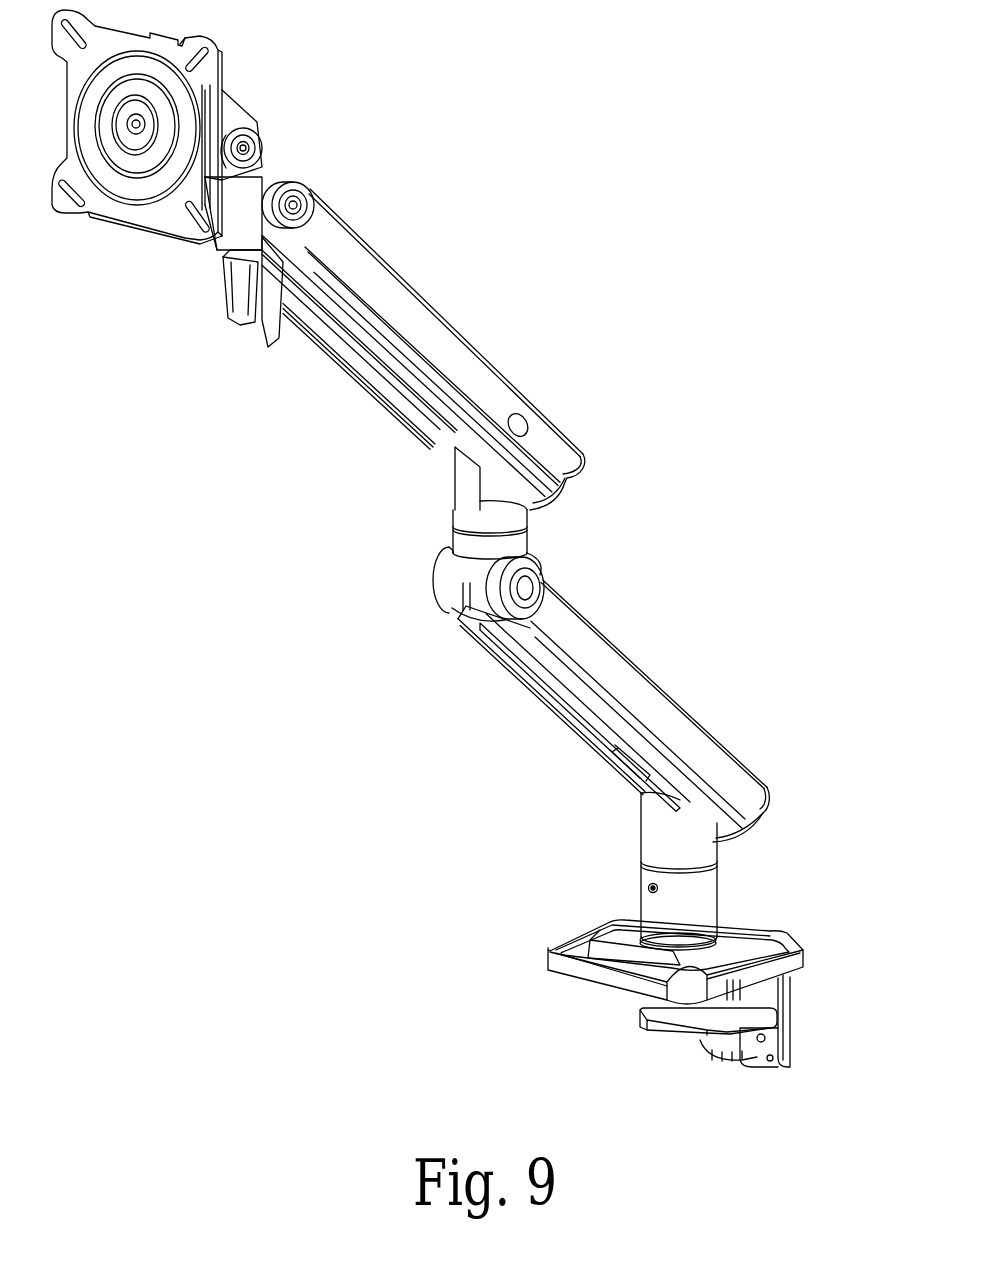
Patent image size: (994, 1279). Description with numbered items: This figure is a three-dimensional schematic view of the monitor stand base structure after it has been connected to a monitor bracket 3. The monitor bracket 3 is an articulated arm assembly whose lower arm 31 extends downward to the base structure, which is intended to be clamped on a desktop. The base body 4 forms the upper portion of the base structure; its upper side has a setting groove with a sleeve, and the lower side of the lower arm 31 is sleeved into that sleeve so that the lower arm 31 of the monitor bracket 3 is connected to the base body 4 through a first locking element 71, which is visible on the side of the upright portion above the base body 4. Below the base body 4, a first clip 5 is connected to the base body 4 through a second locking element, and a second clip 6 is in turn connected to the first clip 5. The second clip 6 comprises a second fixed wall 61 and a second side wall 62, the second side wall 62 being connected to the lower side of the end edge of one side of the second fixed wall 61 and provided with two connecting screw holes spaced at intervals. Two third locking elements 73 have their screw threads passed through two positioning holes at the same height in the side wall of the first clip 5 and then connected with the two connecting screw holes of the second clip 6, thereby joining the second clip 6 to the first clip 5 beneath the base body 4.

The monitor bracket 3 is at (518, 381).
The lower arm 31 is at (673, 700).
The base body 4 is at (767, 923).
The first clip 5 is at (797, 992).
The second clip 6 is at (661, 1057).
The second fixed wall 61 is at (596, 1058).
The second side wall 62 is at (713, 1050).
The first locking element 71 is at (647, 888).
The third locking element 73 is at (759, 1043).